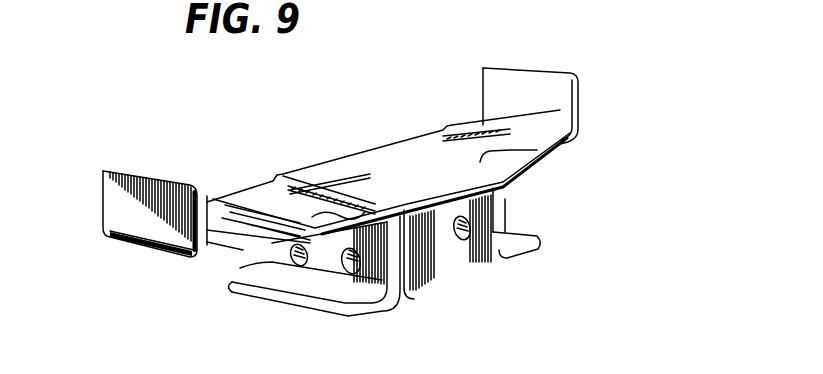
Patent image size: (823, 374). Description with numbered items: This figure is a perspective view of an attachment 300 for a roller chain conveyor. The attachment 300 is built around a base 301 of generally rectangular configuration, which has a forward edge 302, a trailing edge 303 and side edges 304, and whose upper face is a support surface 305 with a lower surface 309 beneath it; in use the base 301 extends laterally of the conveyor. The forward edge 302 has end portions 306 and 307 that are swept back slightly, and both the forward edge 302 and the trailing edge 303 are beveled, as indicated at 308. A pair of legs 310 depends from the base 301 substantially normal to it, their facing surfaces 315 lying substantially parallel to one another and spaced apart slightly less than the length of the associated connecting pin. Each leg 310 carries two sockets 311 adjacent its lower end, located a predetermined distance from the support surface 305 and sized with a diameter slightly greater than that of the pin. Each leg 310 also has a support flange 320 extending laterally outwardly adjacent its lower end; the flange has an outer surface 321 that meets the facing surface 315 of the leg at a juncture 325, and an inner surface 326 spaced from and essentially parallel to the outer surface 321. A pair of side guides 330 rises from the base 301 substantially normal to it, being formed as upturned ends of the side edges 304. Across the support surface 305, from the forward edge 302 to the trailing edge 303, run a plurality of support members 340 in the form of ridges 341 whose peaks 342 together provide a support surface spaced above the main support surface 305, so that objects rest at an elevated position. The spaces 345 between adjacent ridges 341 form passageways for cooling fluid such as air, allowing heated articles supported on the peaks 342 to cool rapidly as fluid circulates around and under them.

The attachment 300 is at (627, 148).
The base 301 is at (425, 147).
The forward edge 302 is at (447, 200).
The trailing edge 303 is at (328, 158).
The side edges 304 is at (173, 255).
The support surface 305 is at (385, 187).
The end portion 306 is at (523, 173).
The end portion 307 is at (237, 197).
The bevel 308 is at (277, 265).
The lower surface 309 is at (237, 263).
The legs 310 is at (270, 260).
The sockets 311 is at (307, 246).
The facing surfaces 315 is at (473, 242).
The support flange 320 is at (343, 320).
The outer surface 321 is at (380, 307).
The juncture 325 is at (400, 297).
The inner surface 326 is at (327, 287).
The side guides 330 is at (103, 190).
The support members 340 is at (275, 170).
The ridges 341 is at (257, 213).
The peaks 342 is at (230, 185).
The spaces 345 is at (362, 226).